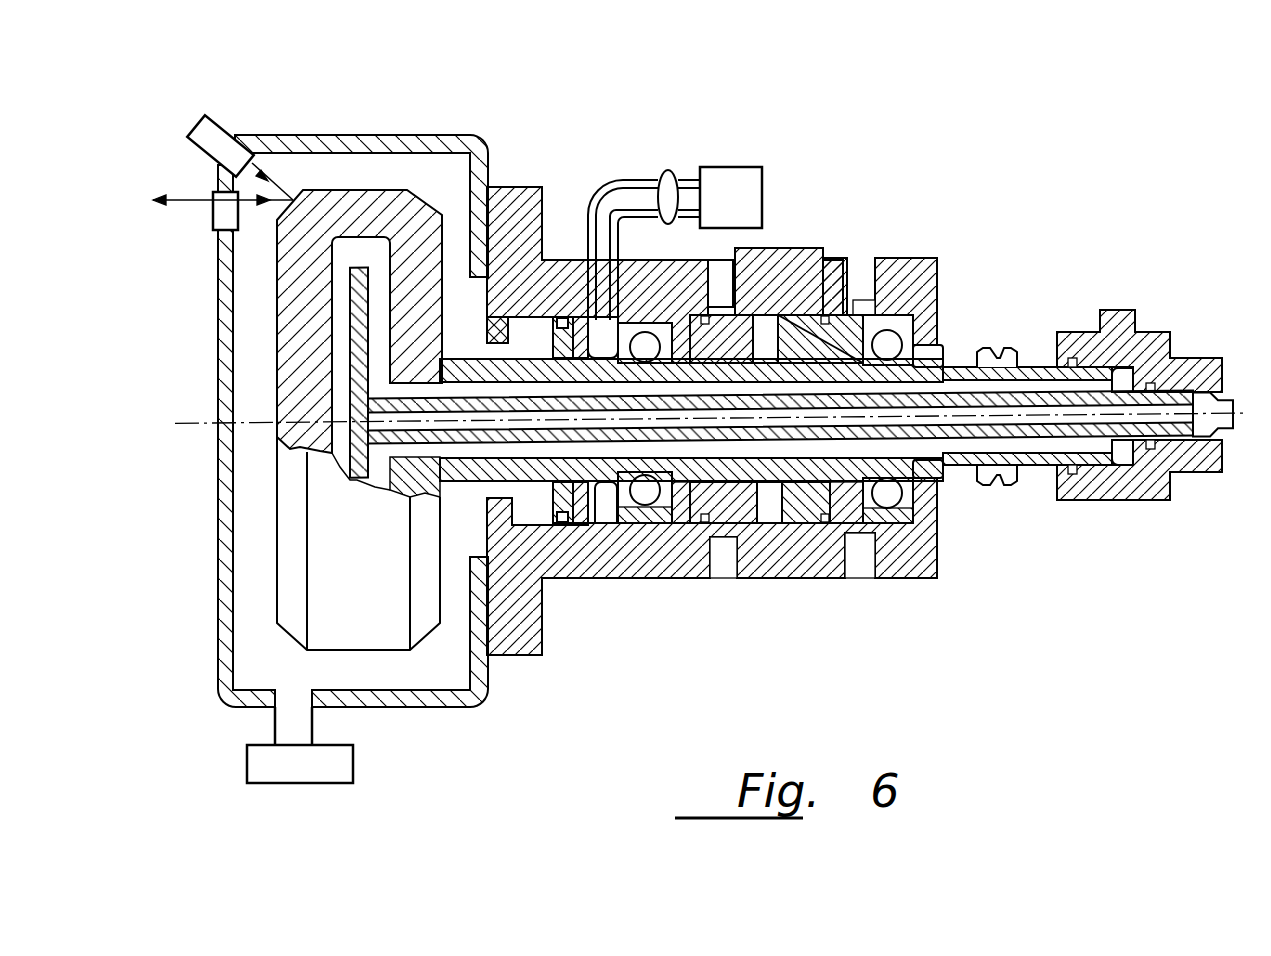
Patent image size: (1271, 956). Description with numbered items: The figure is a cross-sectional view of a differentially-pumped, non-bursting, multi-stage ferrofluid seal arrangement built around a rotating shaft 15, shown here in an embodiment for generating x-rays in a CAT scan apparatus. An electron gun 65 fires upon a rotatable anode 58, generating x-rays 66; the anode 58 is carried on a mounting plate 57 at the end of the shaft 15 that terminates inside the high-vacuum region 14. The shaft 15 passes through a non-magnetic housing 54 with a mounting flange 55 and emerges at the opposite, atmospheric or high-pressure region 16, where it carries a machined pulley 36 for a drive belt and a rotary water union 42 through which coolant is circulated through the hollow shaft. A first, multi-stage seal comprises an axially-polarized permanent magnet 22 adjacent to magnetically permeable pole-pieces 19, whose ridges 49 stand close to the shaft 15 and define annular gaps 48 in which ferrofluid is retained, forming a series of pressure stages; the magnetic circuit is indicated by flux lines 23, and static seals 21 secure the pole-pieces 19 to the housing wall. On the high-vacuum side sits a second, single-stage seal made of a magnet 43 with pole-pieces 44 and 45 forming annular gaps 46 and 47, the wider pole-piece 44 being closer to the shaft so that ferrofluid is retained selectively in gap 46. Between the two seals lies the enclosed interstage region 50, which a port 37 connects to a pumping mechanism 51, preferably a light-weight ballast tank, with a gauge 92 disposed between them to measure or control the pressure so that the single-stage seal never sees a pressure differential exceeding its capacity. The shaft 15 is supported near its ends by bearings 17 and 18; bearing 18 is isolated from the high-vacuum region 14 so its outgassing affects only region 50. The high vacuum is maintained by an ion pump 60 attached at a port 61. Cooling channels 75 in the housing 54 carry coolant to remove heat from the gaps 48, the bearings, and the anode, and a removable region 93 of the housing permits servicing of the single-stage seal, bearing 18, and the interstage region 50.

The high-vacuum region 14 is at (403, 165).
The shaft 15 is at (947, 370).
The atmospheric or high-pressure region 16 is at (1218, 251).
The bearing 17 is at (888, 419).
The bearing 18 is at (645, 423).
The pole-pieces 19 is at (800, 353).
The static seals 21 is at (825, 260).
The permanent magnet 22 is at (767, 323).
The flux lines 23 is at (857, 350).
The pulley 36 is at (1000, 363).
The port 37 is at (633, 182).
The rotary water union 42 is at (1137, 488).
The magnet 43 is at (578, 317).
The pole-piece 44 is at (558, 337).
The pole-piece 45 is at (588, 317).
The annular gap 46 is at (590, 358).
The annular gap 47 is at (606, 502).
The annular gaps 48 is at (897, 280).
The ridges 49 is at (776, 420).
The interstage region 50 is at (597, 187).
The pumping mechanism 51 is at (731, 197).
The housing 54 is at (837, 267).
The mounting flange 55 is at (513, 202).
The mounting plate 57 is at (337, 565).
The anode 58 is at (287, 522).
The ion pump 60 is at (300, 764).
The port 61 is at (303, 723).
The electron gun 65 is at (210, 113).
The x-rays 66 is at (183, 202).
The cooling channels 75 is at (722, 582).
The gauge 92 is at (668, 170).
The removable region 93 is at (495, 317).